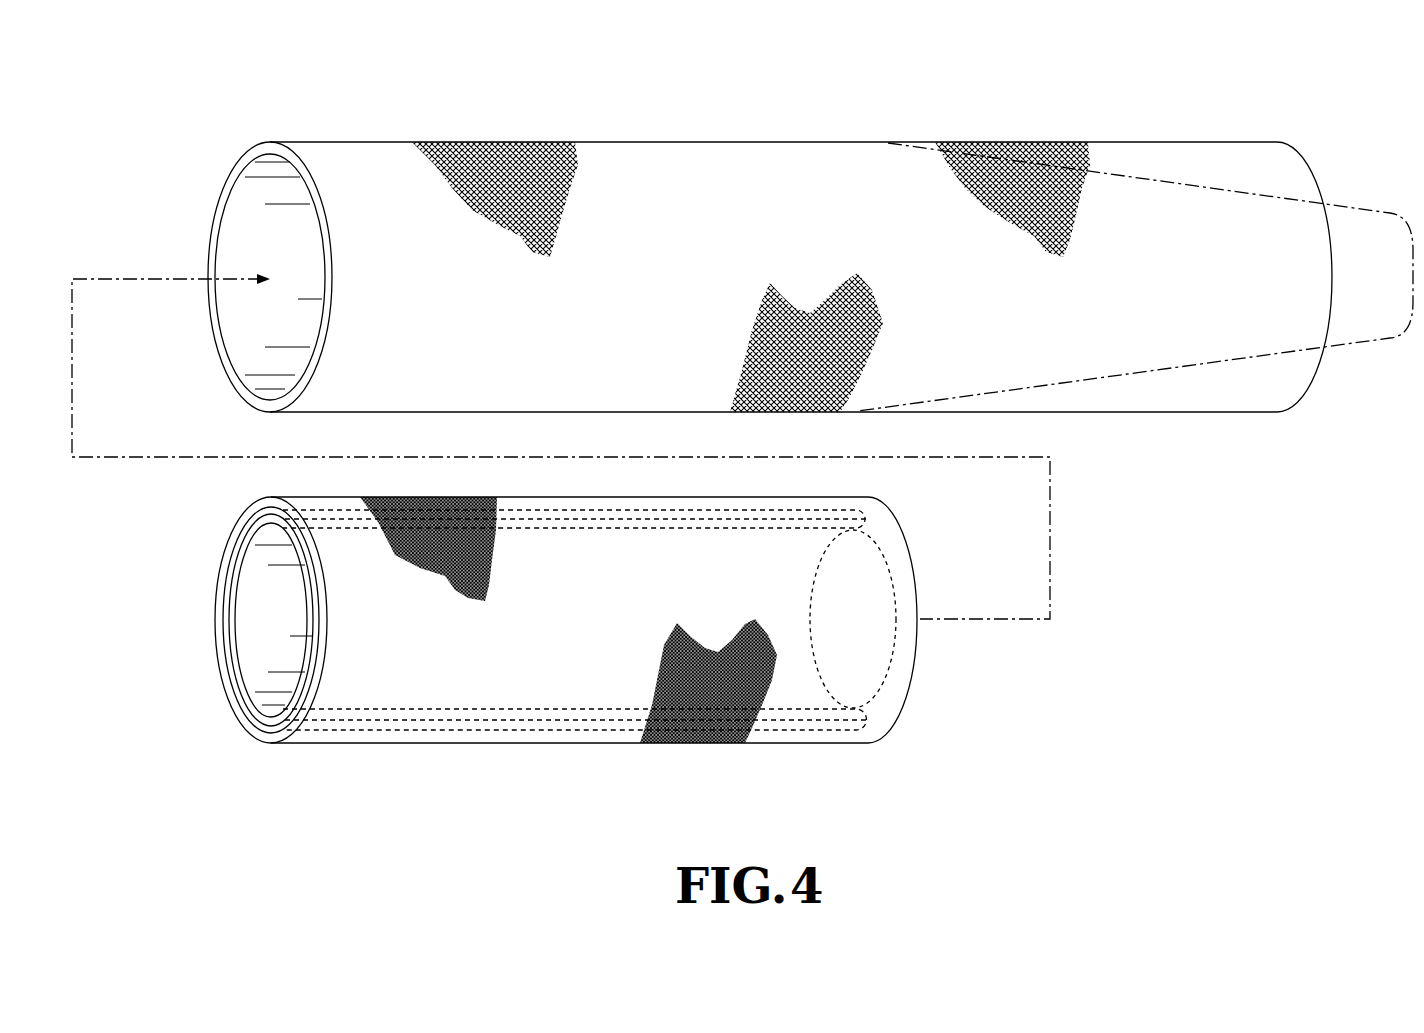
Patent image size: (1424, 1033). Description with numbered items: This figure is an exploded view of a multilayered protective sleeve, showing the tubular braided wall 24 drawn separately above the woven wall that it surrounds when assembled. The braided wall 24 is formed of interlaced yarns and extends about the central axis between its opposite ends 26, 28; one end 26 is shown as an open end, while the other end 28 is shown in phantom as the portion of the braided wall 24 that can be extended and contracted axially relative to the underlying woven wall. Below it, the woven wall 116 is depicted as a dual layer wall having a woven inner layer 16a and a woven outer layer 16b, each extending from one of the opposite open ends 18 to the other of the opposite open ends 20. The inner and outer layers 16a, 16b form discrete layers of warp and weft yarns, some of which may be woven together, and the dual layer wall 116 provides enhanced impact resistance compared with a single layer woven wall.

The braided wall 24 is at (700, 175).
The end of braided wall 26 is at (252, 157).
The end of braided wall 28 is at (1305, 167).
The open end of woven wall 18 is at (217, 677).
The first layer 16a is at (248, 580).
The second layer 16b is at (263, 742).
The lumen 116 is at (362, 735).
The open end of woven wall 20 is at (912, 680).